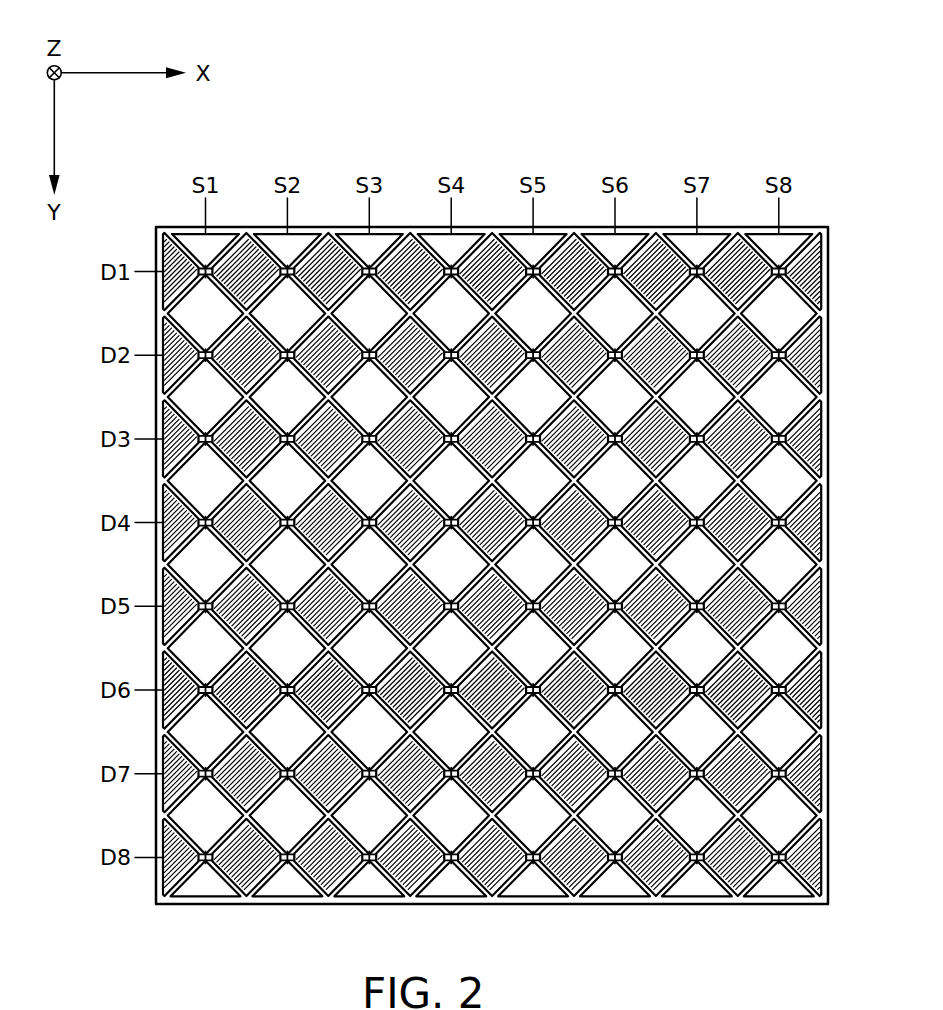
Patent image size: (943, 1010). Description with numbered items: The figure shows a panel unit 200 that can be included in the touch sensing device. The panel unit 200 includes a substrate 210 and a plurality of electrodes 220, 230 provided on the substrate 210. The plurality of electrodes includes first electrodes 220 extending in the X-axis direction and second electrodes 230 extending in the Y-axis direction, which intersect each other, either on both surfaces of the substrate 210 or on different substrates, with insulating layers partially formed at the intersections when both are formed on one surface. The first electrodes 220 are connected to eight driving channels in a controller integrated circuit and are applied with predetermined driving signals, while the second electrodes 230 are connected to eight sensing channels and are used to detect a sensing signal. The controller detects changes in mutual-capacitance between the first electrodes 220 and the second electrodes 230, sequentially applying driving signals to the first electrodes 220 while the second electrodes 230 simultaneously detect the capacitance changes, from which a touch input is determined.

The panel unit 200 is at (606, 120).
The substrate 210 is at (164, 227).
The first electrodes 220 is at (168, 290).
The second electrodes 230 is at (220, 243).